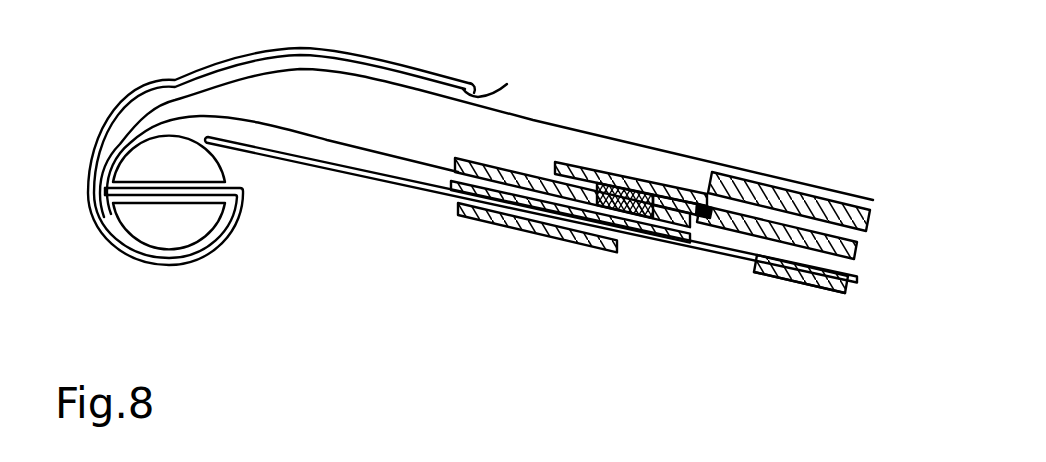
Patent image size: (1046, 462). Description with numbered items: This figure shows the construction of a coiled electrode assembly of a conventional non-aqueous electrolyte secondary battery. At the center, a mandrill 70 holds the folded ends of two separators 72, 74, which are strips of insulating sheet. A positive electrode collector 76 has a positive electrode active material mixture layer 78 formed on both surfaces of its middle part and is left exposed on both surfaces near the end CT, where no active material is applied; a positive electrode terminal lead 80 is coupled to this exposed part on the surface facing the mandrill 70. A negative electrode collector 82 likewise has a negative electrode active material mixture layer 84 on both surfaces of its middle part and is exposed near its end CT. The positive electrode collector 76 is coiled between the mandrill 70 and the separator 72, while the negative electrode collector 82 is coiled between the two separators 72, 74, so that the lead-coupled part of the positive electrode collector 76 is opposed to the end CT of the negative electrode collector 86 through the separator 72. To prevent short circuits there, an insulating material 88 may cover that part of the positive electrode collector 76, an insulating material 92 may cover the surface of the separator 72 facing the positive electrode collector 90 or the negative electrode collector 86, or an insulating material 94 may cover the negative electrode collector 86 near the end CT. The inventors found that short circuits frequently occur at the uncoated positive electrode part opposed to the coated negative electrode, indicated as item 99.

The mandrill 70 is at (162, 228).
The separator 72 is at (262, 48).
The separator 74 is at (508, 112).
The positive electrode collector 76 is at (357, 175).
The positive electrode active material mixture layer 78 is at (806, 287).
The positive electrode terminal lead 80 is at (555, 232).
The negative electrode collector 82 is at (557, 160).
The negative electrode active material mixture layer 84 is at (858, 243).
The negative electrode collector 86 is at (877, 222).
The insulating material 88 is at (602, 197).
The positive electrode collector 90 is at (865, 286).
The insulating material 92 is at (670, 197).
The insulating material 94 is at (692, 192).
The short circuit location 99 is at (755, 268).
The end CT is at (218, 146).